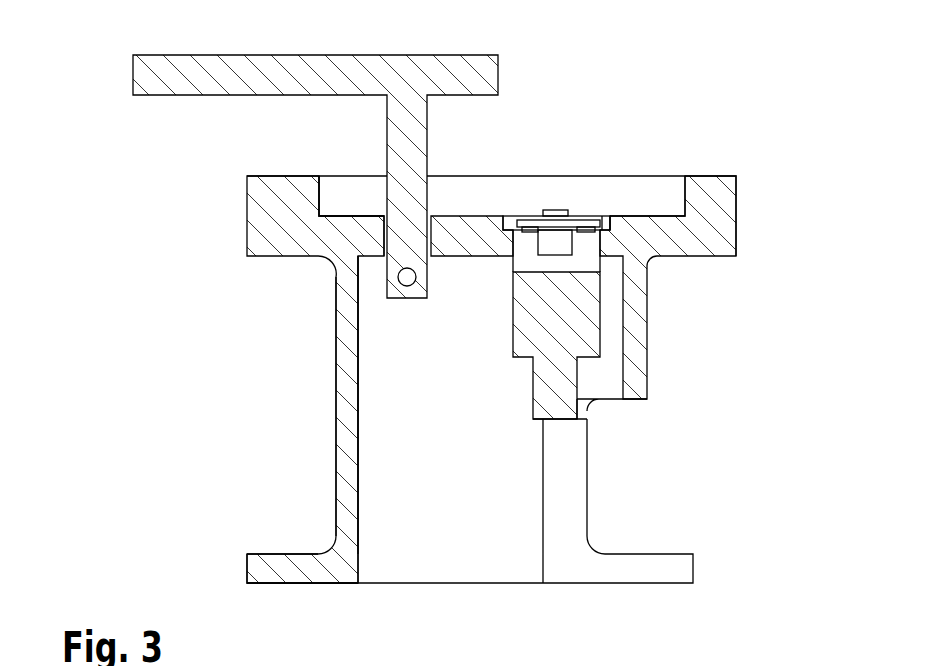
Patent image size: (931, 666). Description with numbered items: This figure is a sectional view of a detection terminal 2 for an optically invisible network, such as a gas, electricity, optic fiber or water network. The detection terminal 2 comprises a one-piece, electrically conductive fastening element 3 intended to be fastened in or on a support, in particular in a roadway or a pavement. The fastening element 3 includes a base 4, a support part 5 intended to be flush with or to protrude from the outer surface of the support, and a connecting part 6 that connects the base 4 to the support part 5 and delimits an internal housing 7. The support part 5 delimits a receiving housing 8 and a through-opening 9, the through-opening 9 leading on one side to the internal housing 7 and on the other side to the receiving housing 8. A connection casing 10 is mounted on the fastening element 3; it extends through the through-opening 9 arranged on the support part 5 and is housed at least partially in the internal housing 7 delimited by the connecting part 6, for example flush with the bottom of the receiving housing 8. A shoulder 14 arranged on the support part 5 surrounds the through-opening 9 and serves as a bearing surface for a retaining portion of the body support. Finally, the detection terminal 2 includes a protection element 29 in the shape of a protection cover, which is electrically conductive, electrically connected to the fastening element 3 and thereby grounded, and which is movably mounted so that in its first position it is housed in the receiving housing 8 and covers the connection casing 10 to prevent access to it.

The detection terminal 2 is at (759, 140).
The fastening element 3 is at (487, 379).
The base 4 is at (288, 580).
The support part 5 is at (698, 218).
The connecting part 6 is at (340, 454).
The internal housing 7 is at (361, 365).
The receiving housing 8 is at (353, 212).
The through-opening 9 is at (516, 252).
The connection casing 10 is at (588, 315).
The shoulder 14 is at (603, 224).
The protection element 29 is at (268, 80).